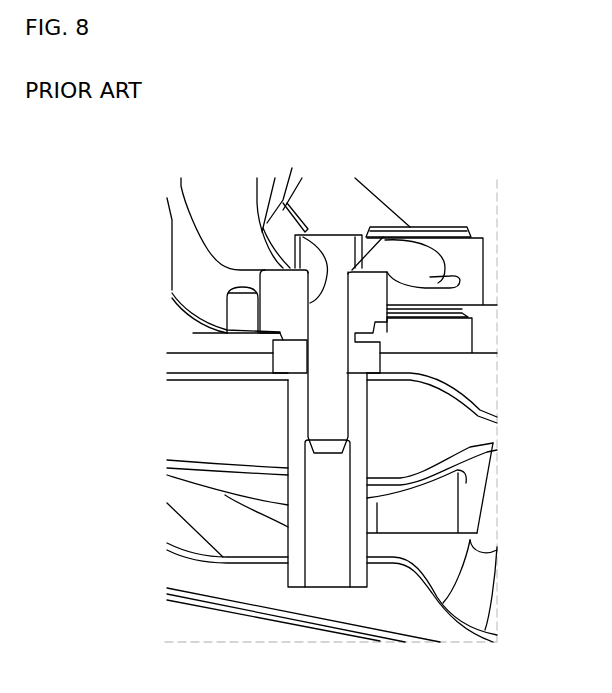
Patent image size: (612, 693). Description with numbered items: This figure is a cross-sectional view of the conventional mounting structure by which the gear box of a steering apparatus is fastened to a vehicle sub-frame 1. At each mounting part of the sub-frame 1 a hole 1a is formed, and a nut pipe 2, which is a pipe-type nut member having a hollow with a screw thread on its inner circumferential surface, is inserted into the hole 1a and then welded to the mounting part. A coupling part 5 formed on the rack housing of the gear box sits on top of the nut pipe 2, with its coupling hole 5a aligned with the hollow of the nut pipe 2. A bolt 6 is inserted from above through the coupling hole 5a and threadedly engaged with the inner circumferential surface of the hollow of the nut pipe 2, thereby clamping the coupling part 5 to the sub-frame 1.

The sub-frame 1 is at (238, 476).
The hole 1a is at (287, 377).
The nut pipe 2 is at (367, 430).
The coupling part 5 is at (368, 285).
The coupling hole 5a is at (283, 200).
The bolt 6 is at (333, 373).